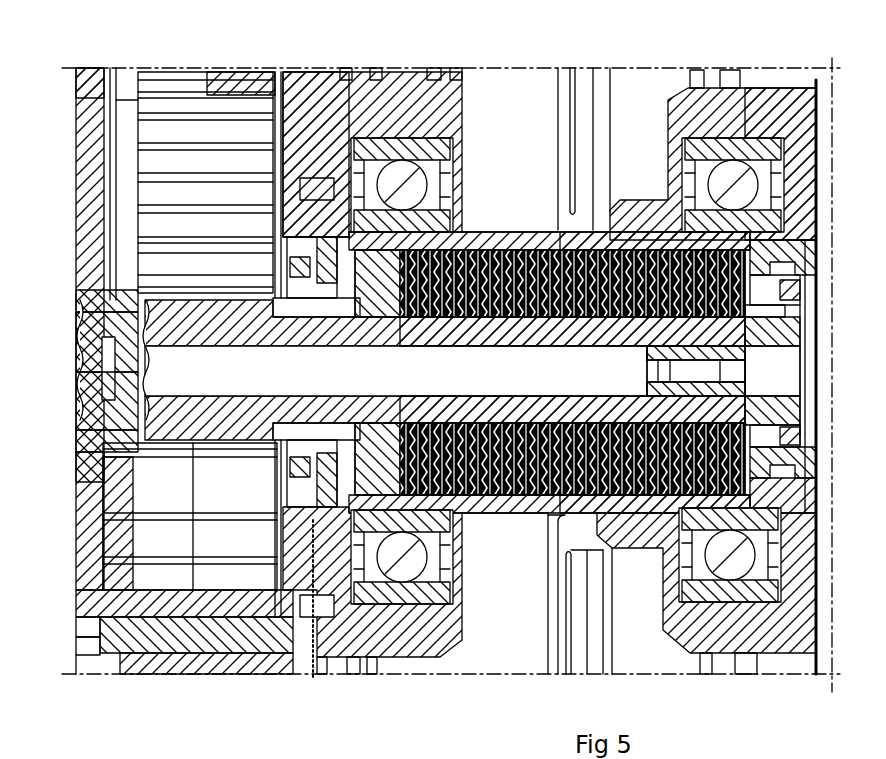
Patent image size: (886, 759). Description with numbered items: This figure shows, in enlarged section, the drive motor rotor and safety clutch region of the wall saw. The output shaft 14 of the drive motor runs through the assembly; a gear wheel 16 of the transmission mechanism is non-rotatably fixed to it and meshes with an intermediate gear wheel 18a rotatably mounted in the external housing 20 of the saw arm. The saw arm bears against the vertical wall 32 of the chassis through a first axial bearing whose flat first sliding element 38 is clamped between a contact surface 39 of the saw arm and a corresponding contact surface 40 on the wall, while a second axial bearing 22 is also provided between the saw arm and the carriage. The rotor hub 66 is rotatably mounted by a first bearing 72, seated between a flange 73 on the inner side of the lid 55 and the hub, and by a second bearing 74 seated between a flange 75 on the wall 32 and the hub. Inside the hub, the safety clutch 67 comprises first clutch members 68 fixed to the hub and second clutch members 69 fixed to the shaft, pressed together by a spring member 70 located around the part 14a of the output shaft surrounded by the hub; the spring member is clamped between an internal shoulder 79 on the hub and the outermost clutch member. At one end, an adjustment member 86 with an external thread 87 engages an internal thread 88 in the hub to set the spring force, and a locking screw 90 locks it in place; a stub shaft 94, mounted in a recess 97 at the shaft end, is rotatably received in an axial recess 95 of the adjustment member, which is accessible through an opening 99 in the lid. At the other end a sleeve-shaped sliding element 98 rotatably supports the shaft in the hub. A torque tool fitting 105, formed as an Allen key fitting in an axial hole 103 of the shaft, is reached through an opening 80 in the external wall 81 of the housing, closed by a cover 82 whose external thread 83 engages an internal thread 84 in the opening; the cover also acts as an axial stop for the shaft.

The output shaft 14 is at (303, 335).
The part of the output shaft 14a is at (512, 338).
The gear wheel 16 is at (215, 432).
The intermediate gear wheel 18a is at (160, 80).
The external housing 20 is at (92, 72).
The second axial bearing 22 is at (335, 628).
The vertical wall 32 is at (342, 70).
The first sliding element 38 is at (313, 645).
The contact surface 39 is at (300, 660).
The contact surface 40 is at (330, 622).
The lid 55 is at (808, 80).
The rotor hub 66 is at (500, 236).
The safety clutch 67 is at (506, 497).
The first clutch member 68 is at (650, 245).
The second clutch member 69 is at (630, 505).
The spring member 70 is at (384, 322).
The first bearing 72 is at (668, 145).
The flange 73 is at (745, 95).
The second bearing 74 is at (462, 148).
The flange 75 is at (413, 105).
The internal shoulder 79 is at (340, 340).
The opening 80 is at (78, 456).
The external wall 81 is at (80, 160).
The cover 82 is at (78, 328).
The external thread 83 is at (78, 426).
The internal thread 84 is at (78, 478).
The adjustment member 86 is at (828, 412).
The external thread 87 is at (828, 474).
The internal thread 88 is at (826, 516).
The locking screw 90 is at (828, 442).
The stub shaft 94 is at (825, 330).
The axial recess 95 is at (822, 300).
The recess 97 is at (650, 368).
The sleeve-shaped sliding element 98 is at (360, 430).
The opening 99 is at (826, 245).
The axial hole 103 is at (78, 312).
The torque tool fitting 105 is at (165, 455).